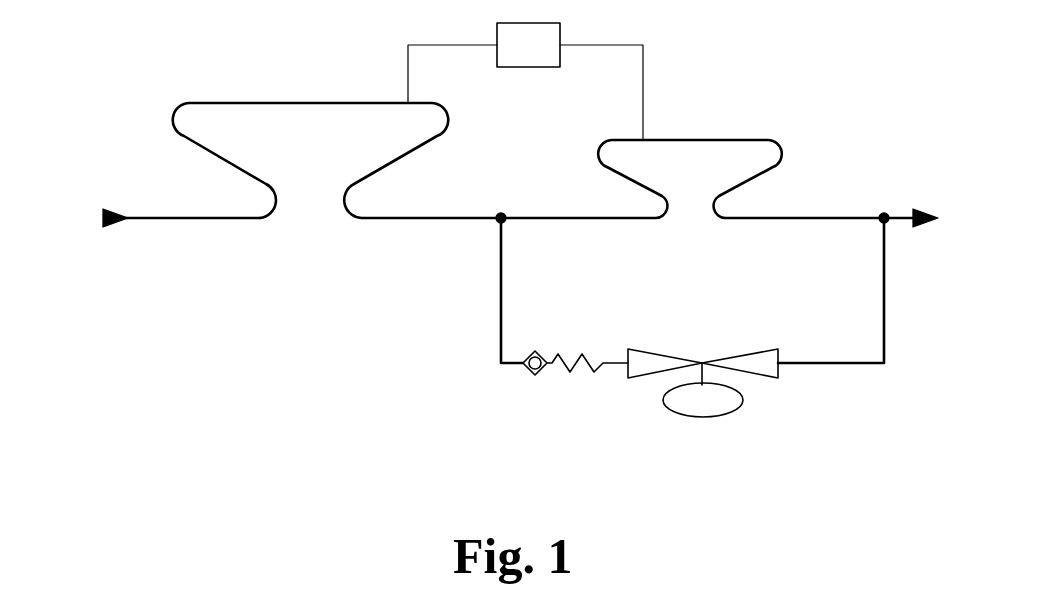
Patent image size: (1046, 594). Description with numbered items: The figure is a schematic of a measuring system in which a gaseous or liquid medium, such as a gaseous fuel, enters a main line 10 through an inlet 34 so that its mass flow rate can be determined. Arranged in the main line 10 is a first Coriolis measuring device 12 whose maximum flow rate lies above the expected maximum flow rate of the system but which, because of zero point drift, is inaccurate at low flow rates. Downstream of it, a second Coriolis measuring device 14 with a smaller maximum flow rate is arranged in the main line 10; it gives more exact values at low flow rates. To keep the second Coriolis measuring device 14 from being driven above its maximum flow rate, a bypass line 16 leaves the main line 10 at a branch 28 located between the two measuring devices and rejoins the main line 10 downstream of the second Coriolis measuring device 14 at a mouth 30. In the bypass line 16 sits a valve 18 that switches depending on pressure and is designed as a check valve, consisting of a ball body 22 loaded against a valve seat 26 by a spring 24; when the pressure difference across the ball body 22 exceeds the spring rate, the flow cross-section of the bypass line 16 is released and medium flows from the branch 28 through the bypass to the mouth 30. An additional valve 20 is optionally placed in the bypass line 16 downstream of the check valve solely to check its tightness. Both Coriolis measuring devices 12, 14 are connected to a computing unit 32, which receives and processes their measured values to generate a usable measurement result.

The main line 10 is at (180, 222).
The first Coriolis measuring device 12 is at (268, 102).
The second Coriolis measuring device 14 is at (672, 140).
The bypass line 16 is at (500, 272).
The valve 18 is at (541, 378).
The additional valve 20 is at (643, 365).
The ball body 22 is at (535, 350).
The spring 24 is at (563, 357).
The valve seat 26 is at (523, 368).
The branch 28 is at (504, 212).
The mouth 30 is at (884, 212).
The computing unit 32 is at (525, 81).
The inlet 34 is at (110, 216).